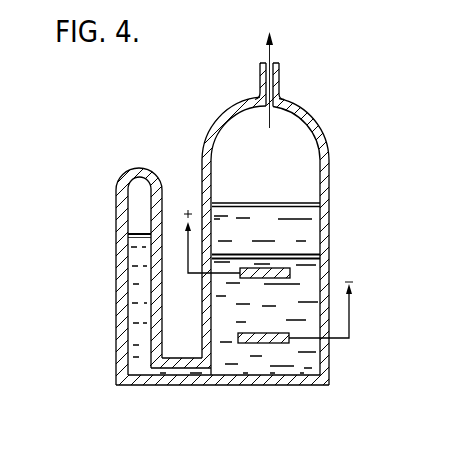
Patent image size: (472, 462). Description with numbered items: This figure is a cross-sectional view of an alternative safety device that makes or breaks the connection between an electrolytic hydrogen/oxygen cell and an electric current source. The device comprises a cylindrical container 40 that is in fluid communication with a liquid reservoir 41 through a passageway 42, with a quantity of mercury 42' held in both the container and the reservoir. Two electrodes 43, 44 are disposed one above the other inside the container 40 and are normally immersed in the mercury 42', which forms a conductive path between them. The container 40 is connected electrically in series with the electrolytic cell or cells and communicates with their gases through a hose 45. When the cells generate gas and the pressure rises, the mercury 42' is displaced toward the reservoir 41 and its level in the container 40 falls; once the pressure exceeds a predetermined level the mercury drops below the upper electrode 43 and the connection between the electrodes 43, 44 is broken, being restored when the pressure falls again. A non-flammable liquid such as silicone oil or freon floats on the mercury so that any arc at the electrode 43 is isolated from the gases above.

The cylindrical container 40 is at (222, 102).
The liquid reservoir 41 is at (143, 191).
The passageway 42 is at (222, 405).
The mercury 42' is at (311, 292).
The electrode 43 is at (311, 218).
The electrode 44 is at (287, 342).
The hose 45 is at (281, 88).